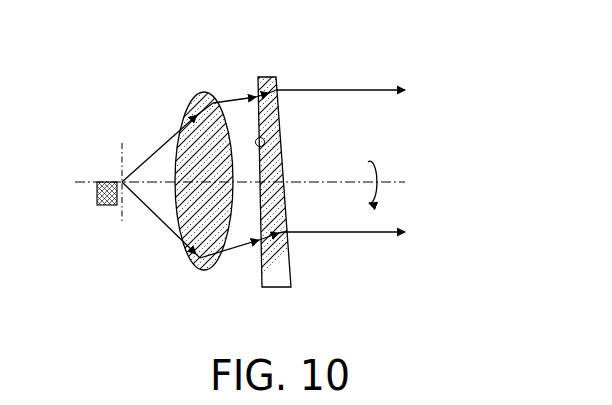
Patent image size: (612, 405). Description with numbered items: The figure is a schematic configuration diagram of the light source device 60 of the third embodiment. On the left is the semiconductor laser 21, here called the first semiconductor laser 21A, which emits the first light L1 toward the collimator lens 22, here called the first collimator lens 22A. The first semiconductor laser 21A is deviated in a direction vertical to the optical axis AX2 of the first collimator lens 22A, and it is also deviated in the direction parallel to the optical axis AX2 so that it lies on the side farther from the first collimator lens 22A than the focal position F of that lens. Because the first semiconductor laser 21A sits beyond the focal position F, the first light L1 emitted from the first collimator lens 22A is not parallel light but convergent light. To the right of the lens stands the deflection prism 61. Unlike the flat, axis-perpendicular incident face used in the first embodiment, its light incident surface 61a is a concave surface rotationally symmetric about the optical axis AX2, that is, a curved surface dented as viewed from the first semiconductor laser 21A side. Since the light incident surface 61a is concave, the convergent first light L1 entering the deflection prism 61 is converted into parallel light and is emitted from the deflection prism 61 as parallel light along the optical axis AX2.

The light source device 60 is at (208, 72).
The semiconductor laser 21 is at (128, 228).
The first semiconductor laser 21A is at (108, 207).
The collimator lens 22 is at (242, 186).
The first collimator lens 22A is at (190, 272).
The deflection prism 61 is at (292, 284).
The light incident surface 61a is at (266, 142).
The first light L1 is at (243, 100).
The optical axis AX2 is at (393, 180).
The focal position F is at (120, 180).